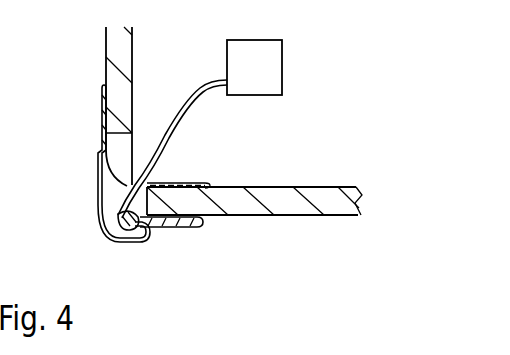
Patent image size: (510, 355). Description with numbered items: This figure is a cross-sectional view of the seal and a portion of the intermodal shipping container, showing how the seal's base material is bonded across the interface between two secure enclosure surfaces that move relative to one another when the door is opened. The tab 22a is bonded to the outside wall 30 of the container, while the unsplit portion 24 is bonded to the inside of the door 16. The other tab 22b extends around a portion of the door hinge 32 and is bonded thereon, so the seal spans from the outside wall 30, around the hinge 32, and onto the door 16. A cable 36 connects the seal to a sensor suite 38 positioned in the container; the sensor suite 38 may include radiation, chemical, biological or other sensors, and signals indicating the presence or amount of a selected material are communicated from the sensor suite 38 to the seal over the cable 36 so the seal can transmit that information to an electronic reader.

The door 16 is at (281, 188).
The tab 22a is at (100, 114).
The tab 22b is at (167, 230).
The unsplit portion 24 is at (175, 183).
The outside wall 30 is at (106, 50).
The door hinge 32 is at (117, 241).
The cable 36 is at (197, 82).
The sensor suite 38 is at (282, 62).